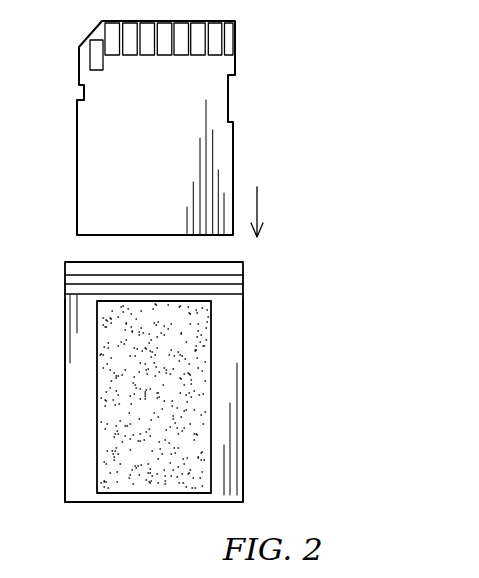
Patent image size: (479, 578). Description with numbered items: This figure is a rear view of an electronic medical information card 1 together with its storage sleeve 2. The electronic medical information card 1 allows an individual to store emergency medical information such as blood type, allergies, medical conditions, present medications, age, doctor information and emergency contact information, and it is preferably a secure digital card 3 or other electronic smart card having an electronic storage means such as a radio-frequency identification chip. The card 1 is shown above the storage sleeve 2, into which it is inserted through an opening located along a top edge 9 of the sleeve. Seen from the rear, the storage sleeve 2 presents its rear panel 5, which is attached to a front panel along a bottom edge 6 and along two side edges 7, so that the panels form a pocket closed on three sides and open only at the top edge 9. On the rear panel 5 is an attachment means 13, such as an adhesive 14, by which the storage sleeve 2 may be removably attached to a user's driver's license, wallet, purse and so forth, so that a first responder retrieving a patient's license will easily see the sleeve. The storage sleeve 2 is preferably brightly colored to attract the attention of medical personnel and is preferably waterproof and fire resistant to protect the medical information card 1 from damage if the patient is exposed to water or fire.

The electronic medical information card 1 is at (191, 128).
The storage sleeve 2 is at (168, 386).
The secure digital (SD) card 3 is at (166, 119).
The rear panel 5 is at (80, 400).
The bottom edge 6 is at (173, 502).
The side edges 7 is at (65, 438).
The top edge 9 is at (80, 262).
The attachment means 13 is at (125, 421).
The adhesive 14 is at (132, 475).